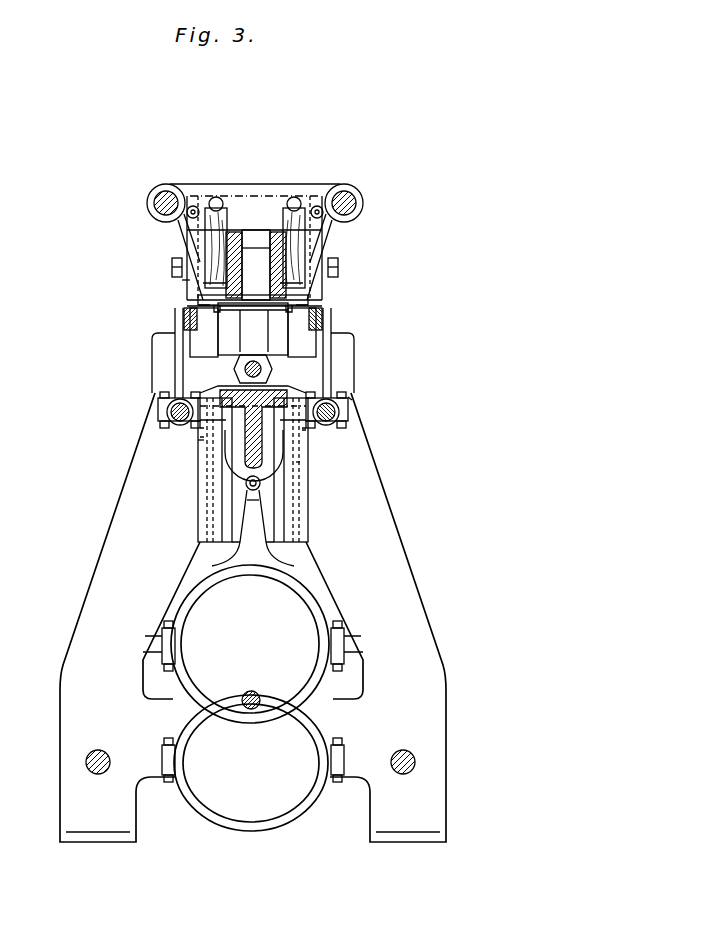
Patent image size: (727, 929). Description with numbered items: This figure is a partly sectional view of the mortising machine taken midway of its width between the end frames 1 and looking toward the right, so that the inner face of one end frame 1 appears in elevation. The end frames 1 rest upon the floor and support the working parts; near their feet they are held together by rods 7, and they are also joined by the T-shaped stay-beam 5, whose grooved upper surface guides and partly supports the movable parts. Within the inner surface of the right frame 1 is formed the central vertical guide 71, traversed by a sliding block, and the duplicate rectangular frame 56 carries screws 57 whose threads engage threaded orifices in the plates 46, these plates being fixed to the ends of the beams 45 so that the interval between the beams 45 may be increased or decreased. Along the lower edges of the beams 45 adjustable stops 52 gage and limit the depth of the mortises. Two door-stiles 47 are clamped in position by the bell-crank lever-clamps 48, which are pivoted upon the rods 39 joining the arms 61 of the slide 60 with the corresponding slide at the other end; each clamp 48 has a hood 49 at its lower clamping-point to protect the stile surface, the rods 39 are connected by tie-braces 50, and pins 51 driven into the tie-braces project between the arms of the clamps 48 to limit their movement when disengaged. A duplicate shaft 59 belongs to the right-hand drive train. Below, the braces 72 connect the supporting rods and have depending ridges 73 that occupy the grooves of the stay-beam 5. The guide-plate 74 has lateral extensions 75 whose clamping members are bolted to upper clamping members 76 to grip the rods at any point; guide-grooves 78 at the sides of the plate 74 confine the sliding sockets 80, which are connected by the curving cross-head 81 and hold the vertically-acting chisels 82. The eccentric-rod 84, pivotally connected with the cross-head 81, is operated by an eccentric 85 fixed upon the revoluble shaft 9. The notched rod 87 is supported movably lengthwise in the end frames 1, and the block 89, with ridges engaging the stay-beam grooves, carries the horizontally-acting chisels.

The end frame 1 is at (253, 617).
The stay-beam 5 is at (200, 440).
The rod 7 is at (98, 775).
The revoluble shaft 9 is at (258, 694).
The rod 39 is at (158, 192).
The beam 45 is at (278, 232).
The plate 46 is at (256, 265).
The door-stile 47 is at (200, 307).
The bell-crank lever-clamp 48 is at (185, 228).
The hood 49 is at (212, 283).
The tie-brace 50 is at (292, 184).
The pin 51 is at (207, 262).
The adjustable stop 52 is at (253, 299).
The frame 56 is at (183, 281).
The screw 57 is at (172, 265).
The shaft 59 is at (178, 345).
The slide 60 is at (162, 372).
The arm 61 is at (188, 334).
The central vertical guide 71 is at (253, 329).
The brace 72 is at (205, 392).
The depending ridge 73 is at (352, 398).
The guide-plate 74 is at (268, 500).
The lateral extension 75 is at (203, 428).
The upper clamping member 76 is at (160, 412).
The guide-groove 78 is at (213, 518).
The sliding socket 80 is at (203, 437).
The cross-head 81 is at (300, 462).
The vertically-acting chisel 82 is at (256, 334).
The eccentric-rod 84 is at (253, 498).
The eccentric 85 is at (253, 698).
The rod 87 is at (248, 369).
The block 89 is at (255, 410).